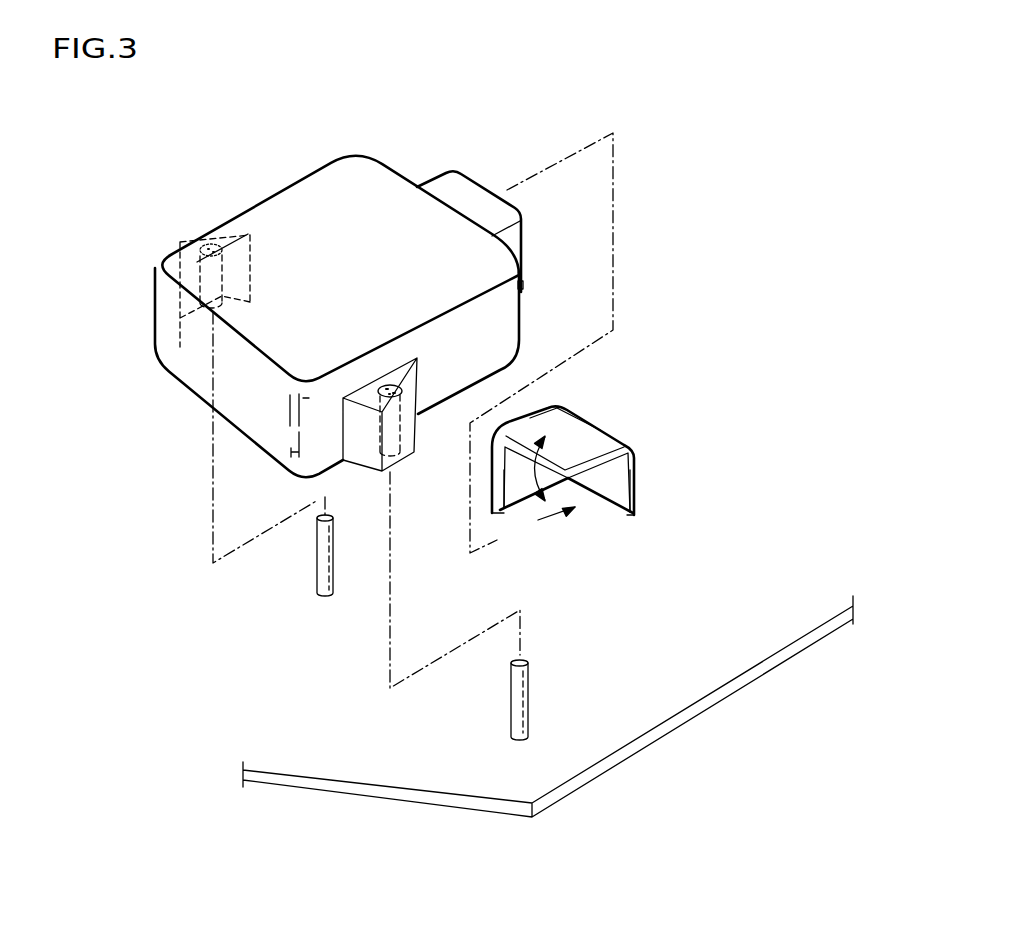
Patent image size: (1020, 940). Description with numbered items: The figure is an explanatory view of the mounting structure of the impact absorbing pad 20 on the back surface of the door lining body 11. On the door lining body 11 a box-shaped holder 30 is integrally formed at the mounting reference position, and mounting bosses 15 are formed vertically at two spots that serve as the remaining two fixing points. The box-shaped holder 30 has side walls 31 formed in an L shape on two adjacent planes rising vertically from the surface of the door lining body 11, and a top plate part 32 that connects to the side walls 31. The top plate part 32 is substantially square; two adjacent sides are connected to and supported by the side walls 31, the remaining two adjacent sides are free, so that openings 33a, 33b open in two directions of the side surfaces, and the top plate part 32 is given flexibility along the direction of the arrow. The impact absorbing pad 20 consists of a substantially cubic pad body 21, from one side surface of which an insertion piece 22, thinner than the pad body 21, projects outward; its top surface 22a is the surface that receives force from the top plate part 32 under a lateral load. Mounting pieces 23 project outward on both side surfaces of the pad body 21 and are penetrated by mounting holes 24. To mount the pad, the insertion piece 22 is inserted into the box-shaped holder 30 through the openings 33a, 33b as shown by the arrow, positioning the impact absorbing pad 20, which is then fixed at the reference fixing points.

The door lining body 11 is at (652, 705).
The mounting boss 15 is at (323, 565).
The impact absorbing pad 20 is at (350, 302).
The pad body 21 is at (331, 250).
The insertion piece 22 is at (520, 240).
The top surface 22a is at (472, 192).
The mounting piece 23 is at (355, 440).
The mounting hole 24 is at (400, 383).
The box-shaped holder 30 is at (554, 451).
The side wall 31 is at (493, 480).
The top plate part 32 is at (570, 436).
The opening 33a is at (536, 546).
The opening 33b is at (619, 546).